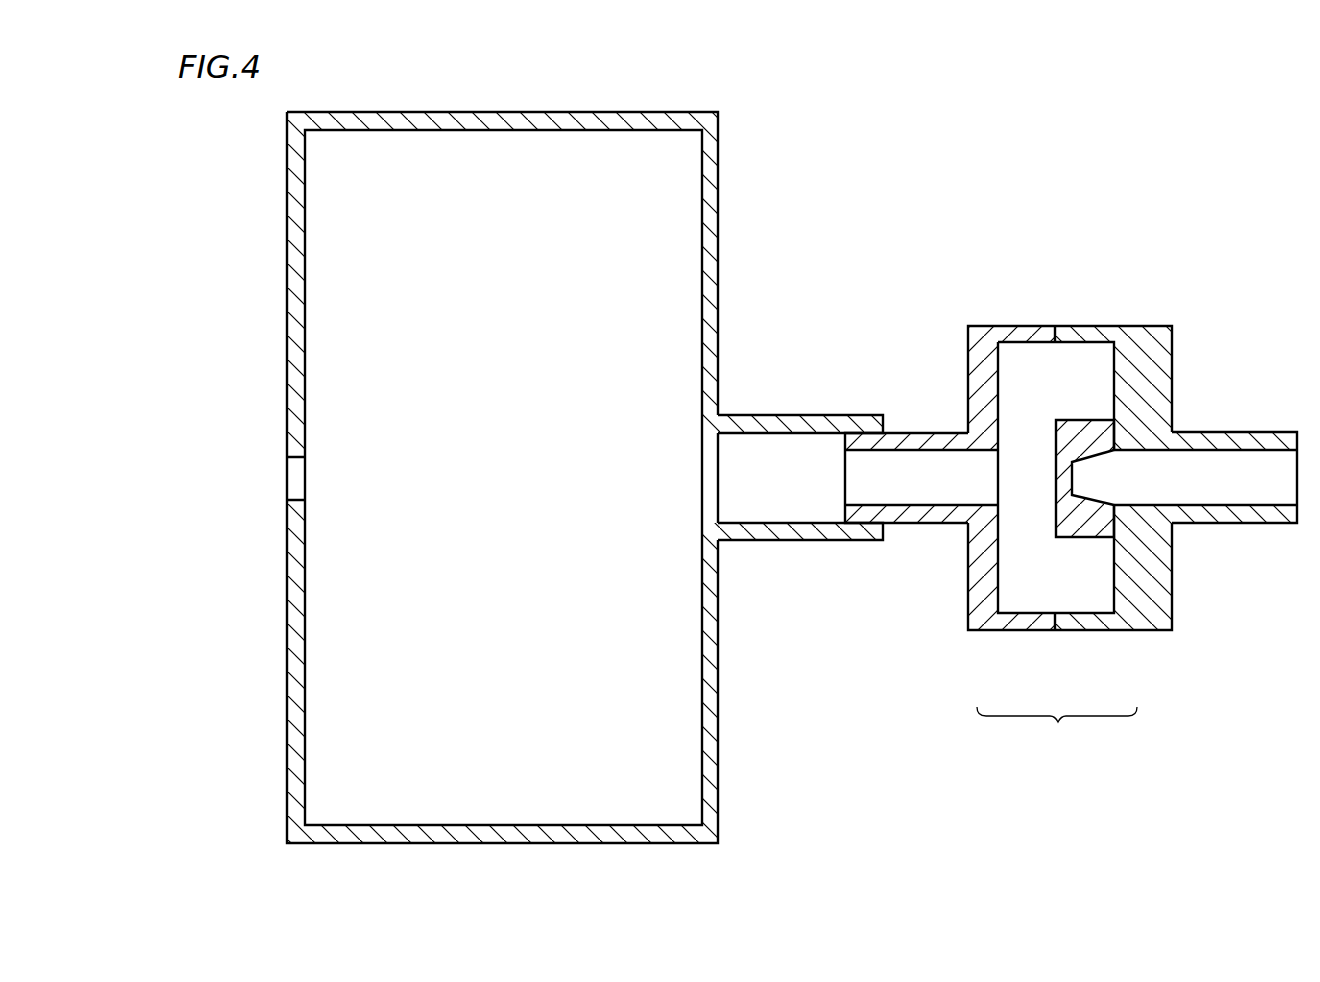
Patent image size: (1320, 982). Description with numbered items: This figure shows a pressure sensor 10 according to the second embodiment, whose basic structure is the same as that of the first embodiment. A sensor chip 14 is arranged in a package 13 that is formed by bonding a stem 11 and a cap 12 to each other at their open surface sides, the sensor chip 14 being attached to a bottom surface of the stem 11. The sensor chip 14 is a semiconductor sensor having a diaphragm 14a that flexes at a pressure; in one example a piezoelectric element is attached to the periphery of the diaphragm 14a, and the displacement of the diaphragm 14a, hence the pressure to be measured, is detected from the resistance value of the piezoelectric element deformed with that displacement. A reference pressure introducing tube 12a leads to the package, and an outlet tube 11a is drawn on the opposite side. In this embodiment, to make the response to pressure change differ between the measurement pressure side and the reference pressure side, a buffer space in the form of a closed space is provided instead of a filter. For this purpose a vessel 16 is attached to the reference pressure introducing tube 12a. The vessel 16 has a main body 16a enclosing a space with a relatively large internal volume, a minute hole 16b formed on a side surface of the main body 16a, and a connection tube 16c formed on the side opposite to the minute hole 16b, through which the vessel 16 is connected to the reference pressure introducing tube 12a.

The pressure sensor 10 is at (1062, 298).
The stem 11 is at (1107, 631).
The outlet pipe 11a is at (1243, 442).
The cap 12 is at (1003, 631).
The reference pressure introducing tube 12a is at (921, 515).
The package 13 is at (1057, 727).
The sensor chip 14 is at (1079, 518).
The diaphragm 14a is at (1053, 440).
The vessel 16 is at (638, 846).
The main body 16a is at (437, 803).
The minute hole 16b is at (300, 478).
The connection tube 16c is at (797, 416).